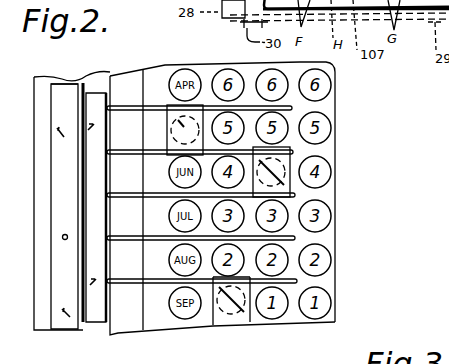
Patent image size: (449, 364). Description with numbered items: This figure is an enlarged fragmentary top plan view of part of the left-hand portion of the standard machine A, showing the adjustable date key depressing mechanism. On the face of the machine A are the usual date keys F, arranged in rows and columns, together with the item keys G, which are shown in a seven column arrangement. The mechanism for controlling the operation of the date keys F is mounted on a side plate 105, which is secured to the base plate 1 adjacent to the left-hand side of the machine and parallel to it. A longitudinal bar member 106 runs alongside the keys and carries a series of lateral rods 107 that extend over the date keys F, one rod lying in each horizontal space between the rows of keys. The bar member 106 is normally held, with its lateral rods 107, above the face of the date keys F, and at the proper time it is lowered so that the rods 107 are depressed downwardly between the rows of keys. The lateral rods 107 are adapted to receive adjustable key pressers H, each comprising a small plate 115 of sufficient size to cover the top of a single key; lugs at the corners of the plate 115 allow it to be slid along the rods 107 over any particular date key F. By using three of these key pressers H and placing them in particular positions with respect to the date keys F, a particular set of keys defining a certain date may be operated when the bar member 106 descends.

The base plate 1 is at (47, 333).
The side plate 105 is at (72, 84).
The longitudinal bar member 106 is at (99, 93).
The lateral rods 107 is at (155, 104).
The small plate 115 is at (279, 178).
The standard machine A is at (337, 241).
The date keys F is at (218, 72).
The item keys G is at (325, 128).
The adjustable key pressers H is at (170, 142).